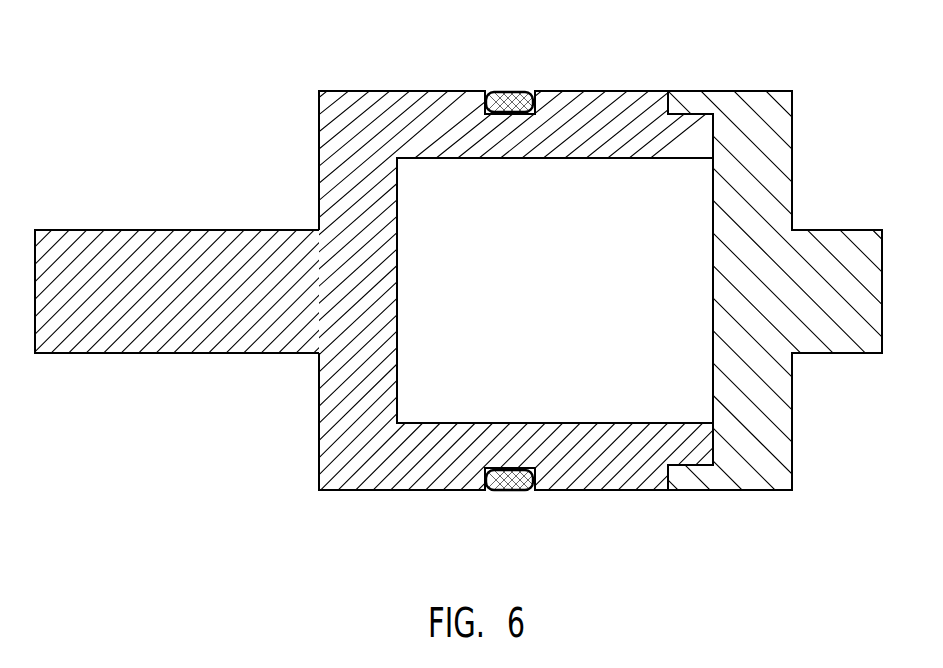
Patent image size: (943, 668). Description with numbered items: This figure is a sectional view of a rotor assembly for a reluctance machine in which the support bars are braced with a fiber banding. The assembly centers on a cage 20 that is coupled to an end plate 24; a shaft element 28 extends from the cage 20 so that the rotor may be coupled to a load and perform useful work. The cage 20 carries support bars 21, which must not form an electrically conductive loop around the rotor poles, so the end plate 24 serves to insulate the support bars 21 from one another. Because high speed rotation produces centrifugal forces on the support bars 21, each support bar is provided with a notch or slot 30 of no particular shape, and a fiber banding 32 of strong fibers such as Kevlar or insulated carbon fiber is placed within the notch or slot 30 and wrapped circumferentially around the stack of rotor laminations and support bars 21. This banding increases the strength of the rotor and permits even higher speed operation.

The cage 20 is at (318, 91).
The support bars 21 is at (438, 91).
The end plate 24 is at (792, 481).
The shaft element 28 is at (84, 354).
The notch or slot 30 is at (518, 90).
The fiber banding 32 is at (487, 91).